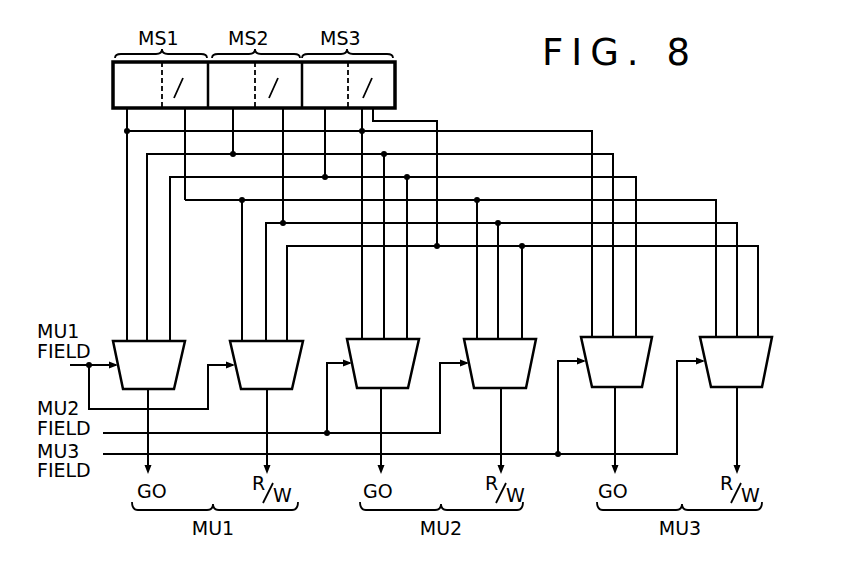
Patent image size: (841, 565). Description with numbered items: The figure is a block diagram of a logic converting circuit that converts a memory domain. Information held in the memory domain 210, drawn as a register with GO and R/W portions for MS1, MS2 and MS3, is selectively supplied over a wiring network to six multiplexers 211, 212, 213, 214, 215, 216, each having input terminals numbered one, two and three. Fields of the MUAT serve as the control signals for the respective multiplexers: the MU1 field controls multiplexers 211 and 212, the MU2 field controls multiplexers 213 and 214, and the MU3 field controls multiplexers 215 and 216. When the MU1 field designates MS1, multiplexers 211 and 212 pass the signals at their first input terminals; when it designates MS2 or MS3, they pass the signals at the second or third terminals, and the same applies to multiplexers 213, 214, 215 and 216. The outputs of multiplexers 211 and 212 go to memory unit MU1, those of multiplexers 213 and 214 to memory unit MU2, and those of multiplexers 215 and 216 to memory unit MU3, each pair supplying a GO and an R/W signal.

The memory domain 210 is at (395, 83).
The multiplexer 211 is at (181, 341).
The multiplexer 212 is at (298, 341).
The multiplexer 213 is at (414, 339).
The multiplexer 214 is at (531, 339).
The multiplexer 215 is at (643, 337).
The multiplexer 216 is at (761, 337).